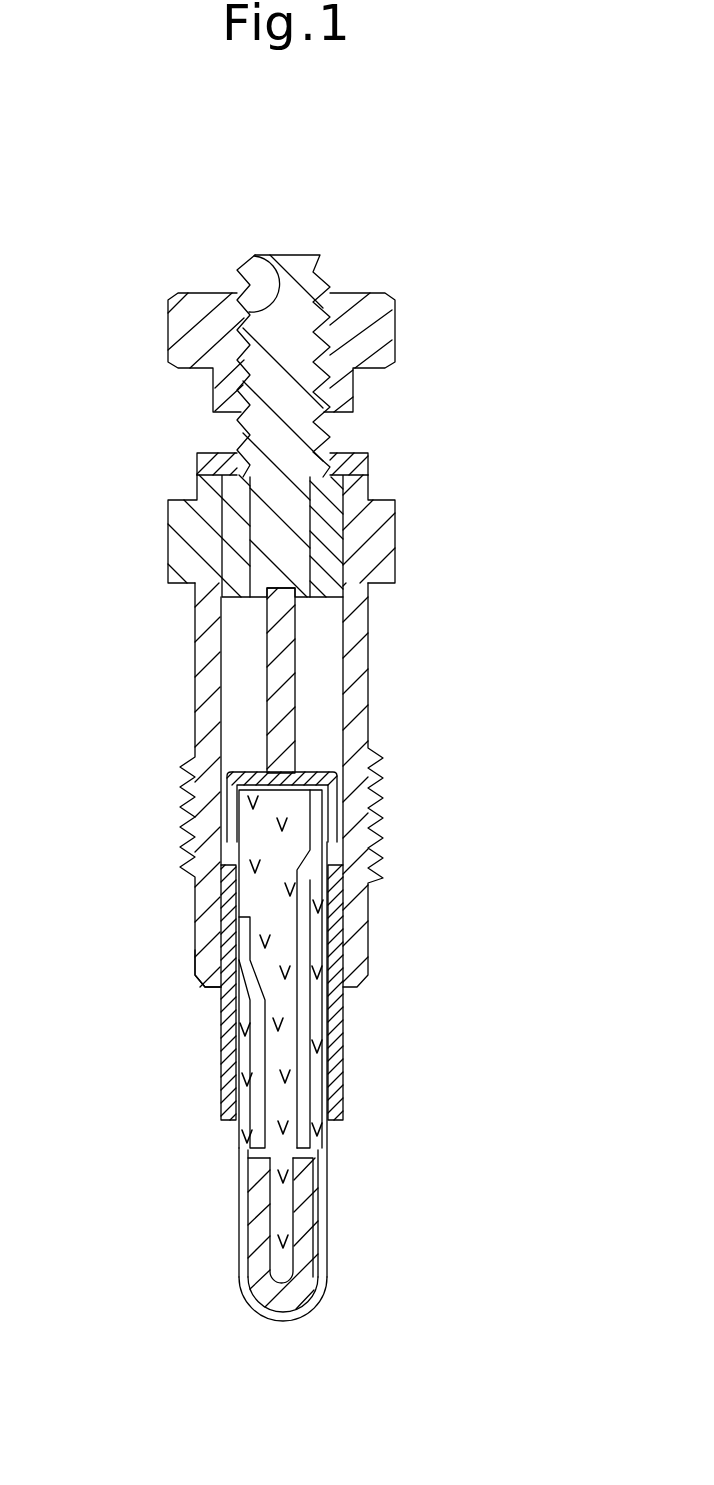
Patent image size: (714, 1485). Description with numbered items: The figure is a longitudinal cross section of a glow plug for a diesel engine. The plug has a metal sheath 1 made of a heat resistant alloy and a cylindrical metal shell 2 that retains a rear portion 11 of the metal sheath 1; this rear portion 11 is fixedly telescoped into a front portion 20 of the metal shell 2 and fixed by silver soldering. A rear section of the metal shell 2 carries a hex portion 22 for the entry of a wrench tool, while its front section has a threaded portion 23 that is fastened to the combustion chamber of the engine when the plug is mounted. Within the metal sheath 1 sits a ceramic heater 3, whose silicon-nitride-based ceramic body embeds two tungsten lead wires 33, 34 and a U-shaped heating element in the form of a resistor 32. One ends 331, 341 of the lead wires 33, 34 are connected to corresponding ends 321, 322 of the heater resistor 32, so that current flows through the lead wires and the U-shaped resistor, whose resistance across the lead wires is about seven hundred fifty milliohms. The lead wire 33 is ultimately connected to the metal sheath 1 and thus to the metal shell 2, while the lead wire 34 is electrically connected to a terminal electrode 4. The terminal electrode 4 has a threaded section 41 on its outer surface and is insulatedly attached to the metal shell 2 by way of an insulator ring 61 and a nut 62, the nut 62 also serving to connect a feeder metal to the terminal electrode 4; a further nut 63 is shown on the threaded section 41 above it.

The metal sheath 1 is at (220, 1090).
The metal shell 2 is at (163, 574).
The ceramic heater 3 is at (331, 1221).
The terminal electrode 4 is at (322, 255).
The rear portion of the metal sheath 11 is at (228, 925).
The front portion of the metal shell 20 is at (198, 972).
The hex portion 22 is at (372, 568).
The threaded portion 23 is at (384, 793).
The heater resistor 32 is at (321, 1273).
The lead wire 33 is at (312, 927).
The lead wire 34 is at (250, 1047).
The threaded section 41 is at (252, 258).
The insulator ring 61 is at (332, 538).
The nut 62 is at (350, 455).
The nut 63 is at (376, 330).
The end of the heater resistor 321 is at (314, 1178).
The end of the heater resistor 322 is at (250, 1180).
The end of the lead wire 331 is at (330, 1133).
The end of the lead wire 341 is at (237, 1147).